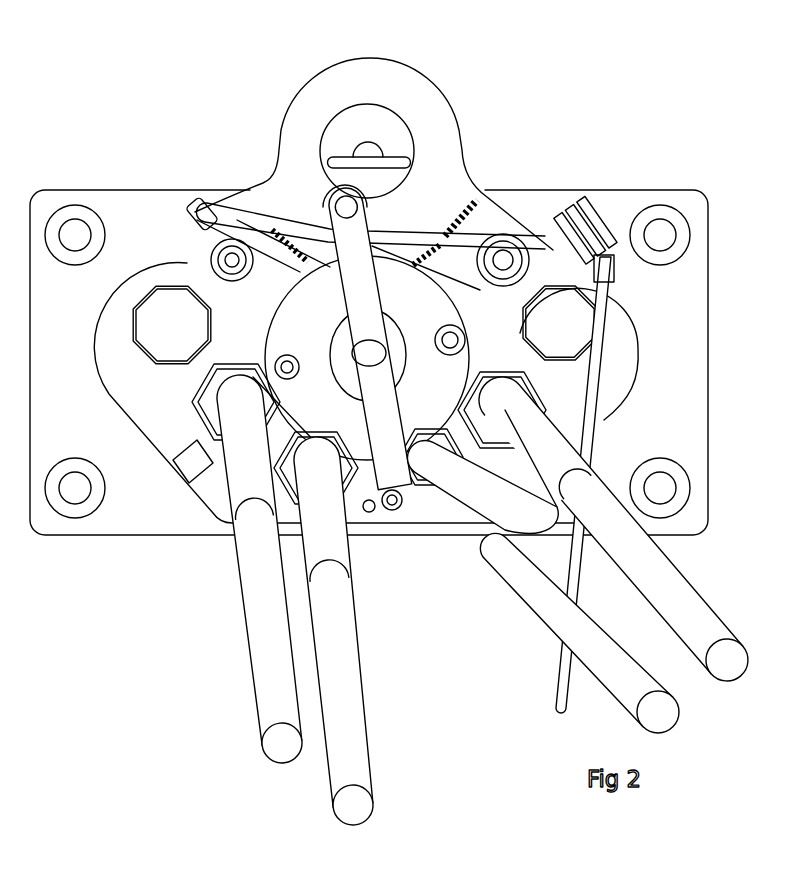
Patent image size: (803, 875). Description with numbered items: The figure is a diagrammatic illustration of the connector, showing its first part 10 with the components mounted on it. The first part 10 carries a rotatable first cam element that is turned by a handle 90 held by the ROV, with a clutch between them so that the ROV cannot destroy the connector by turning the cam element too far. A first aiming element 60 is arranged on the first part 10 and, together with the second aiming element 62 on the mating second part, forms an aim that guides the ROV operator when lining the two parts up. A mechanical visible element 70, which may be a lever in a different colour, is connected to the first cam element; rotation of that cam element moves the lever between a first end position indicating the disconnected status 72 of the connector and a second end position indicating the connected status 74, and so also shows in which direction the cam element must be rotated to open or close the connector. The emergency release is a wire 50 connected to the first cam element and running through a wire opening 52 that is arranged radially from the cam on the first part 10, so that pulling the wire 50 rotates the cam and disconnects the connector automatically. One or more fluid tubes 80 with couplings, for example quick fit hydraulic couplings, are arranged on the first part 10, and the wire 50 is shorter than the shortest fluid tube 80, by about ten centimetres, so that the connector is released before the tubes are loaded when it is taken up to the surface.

The first part 10 is at (617, 370).
The wire 50 is at (560, 670).
The wire opening 52 is at (583, 207).
The first aiming element 60 is at (387, 87).
The second aiming element 62 is at (373, 147).
The mechanical visible element 70 is at (263, 212).
The disconnected status 72 is at (477, 192).
The connected status 74 is at (200, 220).
The fluid tube 80 is at (267, 652).
The handle 90 is at (397, 472).